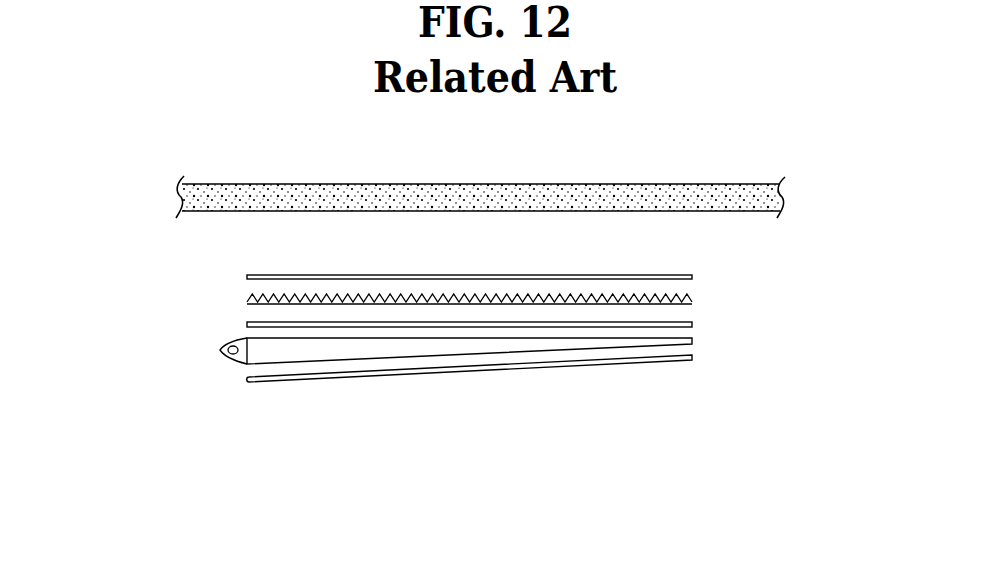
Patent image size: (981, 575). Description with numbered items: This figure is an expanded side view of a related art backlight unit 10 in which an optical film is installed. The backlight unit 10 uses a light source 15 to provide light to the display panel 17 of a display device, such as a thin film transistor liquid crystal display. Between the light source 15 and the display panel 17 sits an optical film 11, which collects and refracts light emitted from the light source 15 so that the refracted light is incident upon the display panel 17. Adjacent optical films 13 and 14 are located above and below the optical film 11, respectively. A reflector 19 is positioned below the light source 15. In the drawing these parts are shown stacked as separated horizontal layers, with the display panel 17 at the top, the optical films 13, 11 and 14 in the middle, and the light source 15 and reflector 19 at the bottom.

The backlight unit 10 is at (135, 229).
The optical film 11 is at (692, 298).
The optical film 13 is at (247, 276).
The optical film 14 is at (247, 324).
The light source 15 is at (259, 362).
The display panel 17 is at (770, 193).
The reflector 19 is at (692, 357).